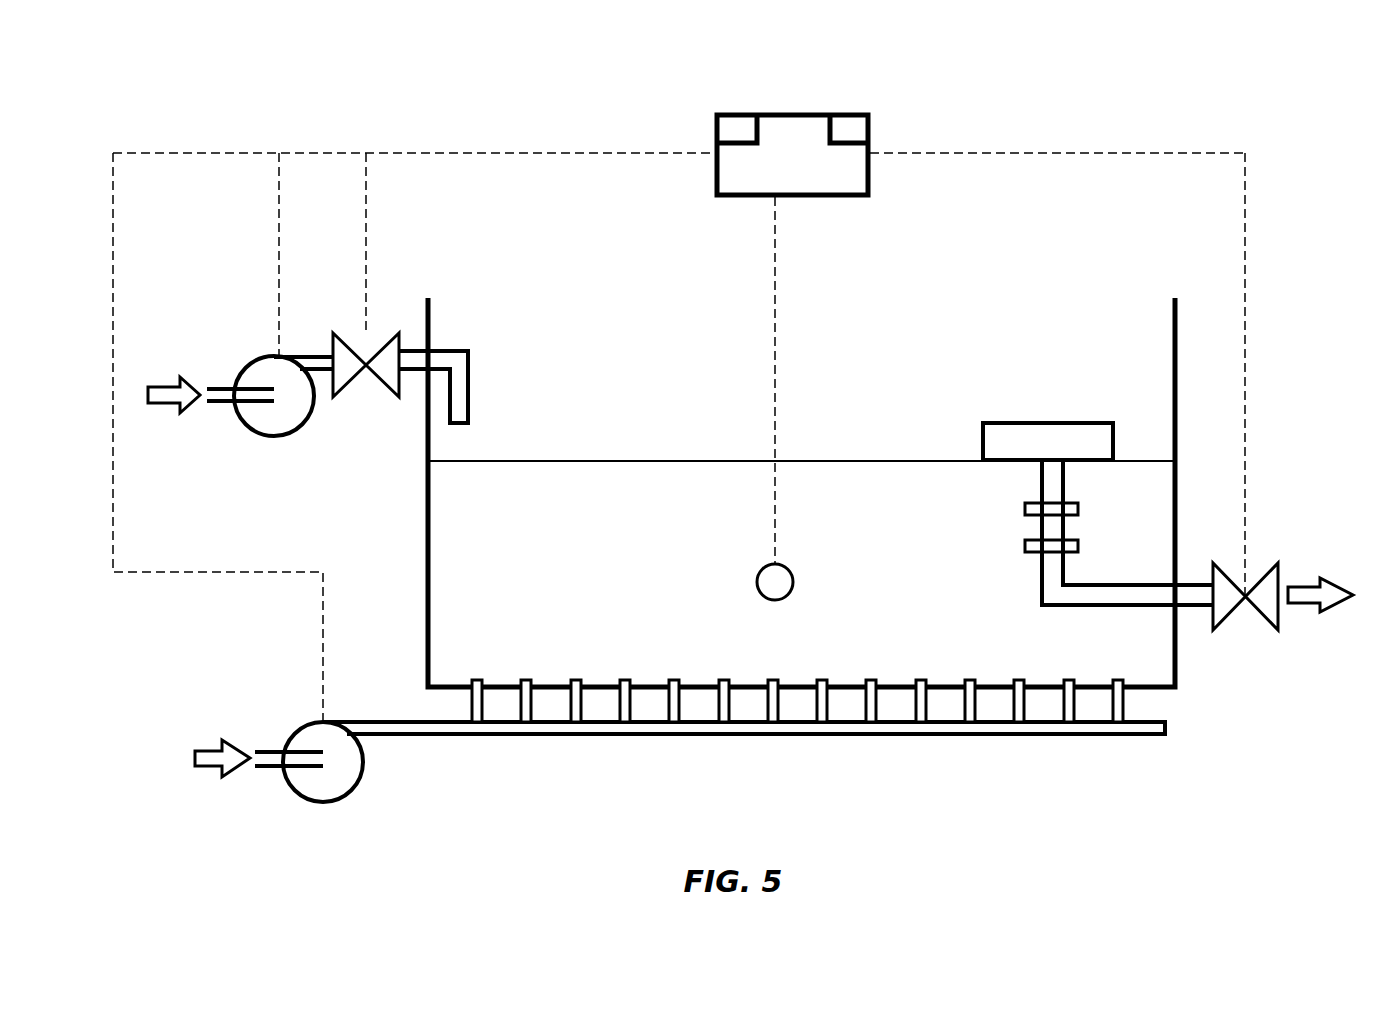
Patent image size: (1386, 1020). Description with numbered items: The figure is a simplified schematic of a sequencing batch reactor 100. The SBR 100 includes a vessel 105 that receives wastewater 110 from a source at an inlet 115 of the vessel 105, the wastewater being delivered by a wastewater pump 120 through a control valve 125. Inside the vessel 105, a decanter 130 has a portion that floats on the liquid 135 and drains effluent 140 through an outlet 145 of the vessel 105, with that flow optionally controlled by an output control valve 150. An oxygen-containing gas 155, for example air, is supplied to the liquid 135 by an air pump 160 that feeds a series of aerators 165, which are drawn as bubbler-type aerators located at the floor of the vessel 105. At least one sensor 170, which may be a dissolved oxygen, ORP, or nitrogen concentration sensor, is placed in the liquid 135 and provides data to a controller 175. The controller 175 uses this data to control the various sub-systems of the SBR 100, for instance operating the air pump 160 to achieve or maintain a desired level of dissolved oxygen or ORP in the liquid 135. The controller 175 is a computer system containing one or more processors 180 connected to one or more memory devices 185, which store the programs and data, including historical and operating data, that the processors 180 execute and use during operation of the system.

The sequencing batch reactor 100 is at (285, 120).
The vessel 105 is at (427, 567).
The wastewater 110 is at (167, 381).
The inlet 115 is at (430, 347).
The wastewater pump 120 is at (263, 420).
The control valve 125 is at (380, 383).
The decanter 130 is at (1052, 422).
The liquid 135 is at (505, 538).
The effluent 140 is at (1303, 582).
The outlet 145 is at (1180, 583).
The output control valve 150 is at (1260, 613).
The oxygen-containing gas 155 is at (212, 748).
The air pump 160 is at (337, 778).
The aerators 165 is at (463, 752).
The sensor 170 is at (789, 573).
The controller 175 is at (775, 163).
The processor 180 is at (733, 130).
The memory device 185 is at (848, 128).